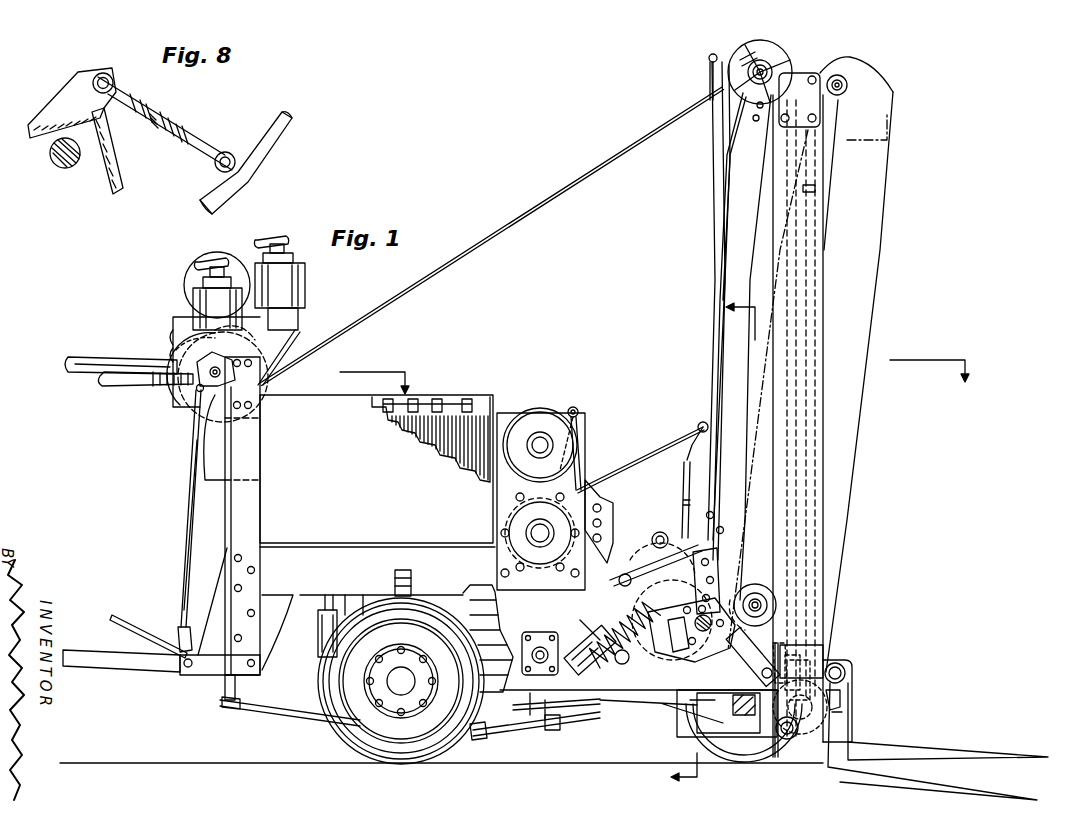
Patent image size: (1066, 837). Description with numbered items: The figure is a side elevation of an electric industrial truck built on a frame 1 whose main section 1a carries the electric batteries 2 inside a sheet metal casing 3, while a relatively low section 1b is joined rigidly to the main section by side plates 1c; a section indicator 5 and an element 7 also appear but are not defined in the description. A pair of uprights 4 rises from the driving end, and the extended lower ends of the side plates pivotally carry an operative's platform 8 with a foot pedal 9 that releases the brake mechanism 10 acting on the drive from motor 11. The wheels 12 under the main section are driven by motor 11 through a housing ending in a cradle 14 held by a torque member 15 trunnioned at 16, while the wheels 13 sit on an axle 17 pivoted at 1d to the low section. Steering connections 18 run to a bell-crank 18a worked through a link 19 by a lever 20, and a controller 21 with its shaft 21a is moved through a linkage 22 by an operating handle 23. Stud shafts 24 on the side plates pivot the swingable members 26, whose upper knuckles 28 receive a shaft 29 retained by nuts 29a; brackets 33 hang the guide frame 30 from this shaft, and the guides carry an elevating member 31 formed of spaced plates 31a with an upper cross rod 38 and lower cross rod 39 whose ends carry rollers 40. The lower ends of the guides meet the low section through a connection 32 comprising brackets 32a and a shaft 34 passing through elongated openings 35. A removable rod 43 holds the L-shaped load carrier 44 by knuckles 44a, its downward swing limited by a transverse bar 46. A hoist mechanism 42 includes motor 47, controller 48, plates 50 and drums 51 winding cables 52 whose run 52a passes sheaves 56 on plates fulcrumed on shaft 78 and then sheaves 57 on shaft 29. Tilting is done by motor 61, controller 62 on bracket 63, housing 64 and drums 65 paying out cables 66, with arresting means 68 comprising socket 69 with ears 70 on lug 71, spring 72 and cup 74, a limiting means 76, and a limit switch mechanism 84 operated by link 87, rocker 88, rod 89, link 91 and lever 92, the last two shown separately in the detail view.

In FIG. 1, the frame 1 is at (519, 652).
In FIG. 1, the main section 1a is at (390, 553).
In FIG. 1, the low section 1b is at (671, 624).
In FIG. 1, the side plates 1c is at (584, 617).
In FIG. 1, the pivot 1d is at (704, 692).
In FIG. 1, the electric batteries 2 is at (405, 440).
In FIG. 1, the sheet metal casing 3 is at (340, 402).
In FIG. 1, the uprights 4 is at (226, 520).
In FIG. 1, the section line 5 is at (733, 458).
In FIG. 1, the rod 7 is at (218, 582).
In FIG. 1, the operative's platform 8 is at (108, 648).
In FIG. 1, the foot pedal 9 is at (142, 616).
In FIG. 1, the brake mechanism 10 is at (318, 628).
In FIG. 1, the motor 11 is at (490, 612).
In FIG. 1, the wheels 12 is at (338, 730).
In FIG. 1, the wheels 13 is at (700, 745).
In FIG. 1, the cradle 14 is at (485, 738).
In FIG. 1, the torque member 15 is at (548, 716).
In FIG. 1, the trunnion 16 is at (540, 645).
In FIG. 1, the axle 17 is at (738, 724).
In FIG. 1, the connections 18 is at (575, 722).
In FIG. 1, the bell-crank 18a is at (225, 686).
In FIG. 1, the link 19 is at (188, 545).
In FIG. 1, the lever 20 is at (118, 358).
In FIG. 1, the controller 21 is at (190, 467).
In FIG. 1, the shaft 21a is at (240, 440).
In FIG. 1, the linkage 22 is at (198, 425).
In FIG. 1, the operating handle 23 is at (140, 386).
In FIG. 1, the stud shafts 24 is at (710, 616).
In FIG. 1, the swingable members 26 is at (735, 425).
In FIG. 1, the knuckles 28 is at (795, 70).
In FIG. 1, the shaft 29 is at (788, 48).
In FIG. 1, the nuts 29a is at (740, 55).
In FIG. 1, the guide frame 30 is at (826, 238).
In FIG. 1, the elevating member 31 is at (835, 660).
In FIG. 1, the plates 31a is at (805, 645).
In FIG. 1, the connection 32 is at (765, 672).
In FIG. 1, the bracket 32a is at (820, 640).
In FIG. 1, the brackets 33 is at (838, 75).
In FIG. 1, the shaft 34 is at (740, 660).
In FIG. 1, the openings 35 is at (768, 622).
In FIG. 1, the upper cross rod 38 is at (762, 600).
In FIG. 1, the lower cross rod 39 is at (850, 705).
In FIG. 1, the rollers 40 is at (755, 595).
In FIG. 1, the hoist mechanism 42 is at (612, 440).
In FIG. 1, the removable rod 43 is at (845, 670).
In FIG. 1, the load carrier 44 is at (938, 741).
In FIG. 1, the knuckles 44a is at (845, 695).
In FIG. 1, the transverse plate or bar 46 is at (842, 719).
In FIG. 1, the electric motor 47 is at (525, 420).
In FIG. 1, the controller 48 is at (200, 300).
In FIG. 1, the plates 50 is at (522, 486).
In FIG. 1, the drums 51 is at (505, 553).
In FIG. 1, the cables 52 is at (725, 148).
In FIG. 1, the cable run 52a is at (606, 545).
In FIG. 1, the sheaves 56 is at (678, 668).
In FIG. 1, the sheaves 57 is at (760, 40).
In FIG. 1, the motor 61 is at (243, 262).
In FIG. 1, the controller 62 is at (303, 292).
In FIG. 1, the bracket 63 is at (300, 324).
In FIG. 1, the housing 64 is at (172, 336).
In FIG. 1, the drums 65 is at (176, 350).
In FIG. 1, the cables 66 is at (552, 207).
In FIG. 1, the arresting and return means 68 is at (604, 589).
In FIG. 1, the socket or cup member 69 is at (722, 585).
In FIG. 1, the ears 70 is at (718, 562).
In FIG. 1, the lug 71 is at (742, 528).
In FIG. 1, the coiled spring 72 is at (625, 635).
In FIG. 1, the cup member 74 is at (584, 650).
In FIG. 1, the limiting means 76 is at (640, 460).
In FIG. 8, the shaft 78 is at (62, 165).
In FIG. 1, the shaft 78 is at (621, 664).
In FIG. 1, the limit switch mechanism 84 is at (659, 504).
In FIG. 1, the link 87 is at (711, 183).
In FIG. 1, the rocker 88 is at (712, 55).
In FIG. 1, the rod 89 is at (820, 300).
In FIG. 8, the link 91 is at (158, 103).
In FIG. 8, the lever 92 is at (272, 165).